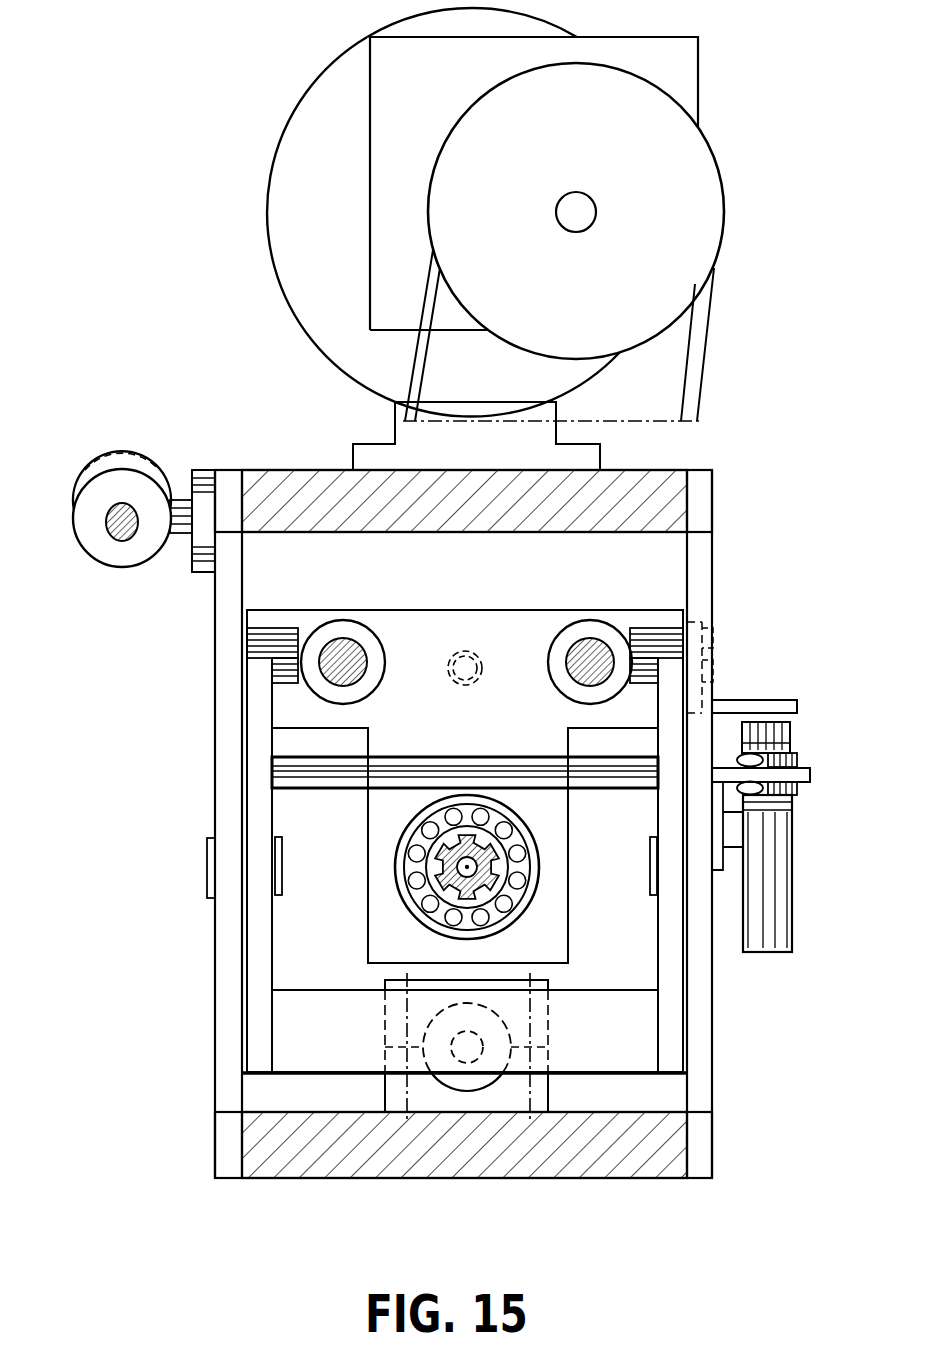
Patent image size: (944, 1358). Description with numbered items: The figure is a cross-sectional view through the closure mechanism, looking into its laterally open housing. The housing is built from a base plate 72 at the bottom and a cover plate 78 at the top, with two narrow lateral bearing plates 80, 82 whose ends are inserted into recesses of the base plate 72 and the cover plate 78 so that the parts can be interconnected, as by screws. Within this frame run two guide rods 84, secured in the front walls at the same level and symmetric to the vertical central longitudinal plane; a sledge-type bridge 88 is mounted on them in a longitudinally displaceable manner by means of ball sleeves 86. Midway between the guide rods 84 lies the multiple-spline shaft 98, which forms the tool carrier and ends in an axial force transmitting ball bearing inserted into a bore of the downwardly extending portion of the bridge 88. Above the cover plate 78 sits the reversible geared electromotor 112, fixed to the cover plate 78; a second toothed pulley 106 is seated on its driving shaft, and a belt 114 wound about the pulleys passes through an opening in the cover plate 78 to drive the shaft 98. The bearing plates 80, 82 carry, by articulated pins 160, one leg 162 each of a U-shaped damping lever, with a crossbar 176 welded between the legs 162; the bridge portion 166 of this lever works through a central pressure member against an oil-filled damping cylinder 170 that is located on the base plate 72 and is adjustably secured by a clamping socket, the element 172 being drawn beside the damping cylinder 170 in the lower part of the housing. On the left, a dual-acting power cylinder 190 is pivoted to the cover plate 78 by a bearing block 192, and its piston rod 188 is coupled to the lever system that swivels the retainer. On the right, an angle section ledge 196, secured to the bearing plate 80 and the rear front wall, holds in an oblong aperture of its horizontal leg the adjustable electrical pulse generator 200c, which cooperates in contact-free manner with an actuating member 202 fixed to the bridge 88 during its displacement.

The base plate 72 is at (473, 1160).
The cover plate 78 is at (297, 482).
The bearing plate 80 is at (700, 570).
The bearing plate 82 is at (222, 637).
The guide rod 84 is at (336, 645).
The ball sleeve 86 is at (358, 640).
The sledge-type bridge 88 is at (464, 630).
The multiple-spline shaft 98 is at (503, 887).
The second toothed pulley 106 is at (712, 190).
The reversible geared electromotor 112 is at (300, 181).
The belt 114 is at (697, 348).
The articulated pin 160 is at (207, 866).
The leg 162 is at (265, 948).
The bridge portion 166 is at (623, 1036).
The damping cylinder 170 is at (532, 1092).
The pin 172 is at (397, 1090).
The crossbar 176 is at (328, 788).
The piston rod 188 is at (128, 540).
The dual-acting power cylinder 190 is at (96, 543).
The bearing block 192 is at (203, 470).
The angle section ledge 196 is at (810, 775).
The electrical pulse generator 200c is at (780, 880).
The actuating member 202 is at (757, 700).